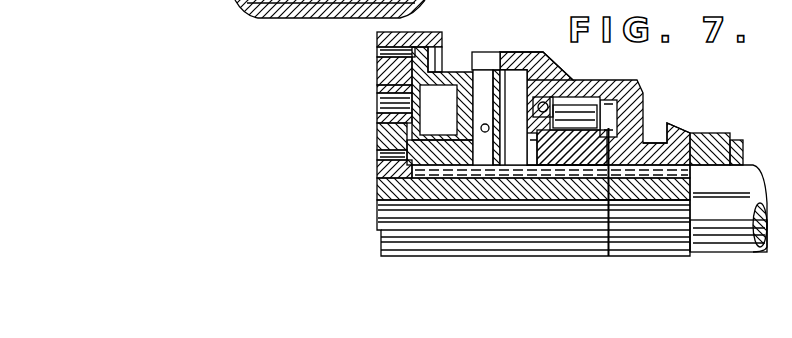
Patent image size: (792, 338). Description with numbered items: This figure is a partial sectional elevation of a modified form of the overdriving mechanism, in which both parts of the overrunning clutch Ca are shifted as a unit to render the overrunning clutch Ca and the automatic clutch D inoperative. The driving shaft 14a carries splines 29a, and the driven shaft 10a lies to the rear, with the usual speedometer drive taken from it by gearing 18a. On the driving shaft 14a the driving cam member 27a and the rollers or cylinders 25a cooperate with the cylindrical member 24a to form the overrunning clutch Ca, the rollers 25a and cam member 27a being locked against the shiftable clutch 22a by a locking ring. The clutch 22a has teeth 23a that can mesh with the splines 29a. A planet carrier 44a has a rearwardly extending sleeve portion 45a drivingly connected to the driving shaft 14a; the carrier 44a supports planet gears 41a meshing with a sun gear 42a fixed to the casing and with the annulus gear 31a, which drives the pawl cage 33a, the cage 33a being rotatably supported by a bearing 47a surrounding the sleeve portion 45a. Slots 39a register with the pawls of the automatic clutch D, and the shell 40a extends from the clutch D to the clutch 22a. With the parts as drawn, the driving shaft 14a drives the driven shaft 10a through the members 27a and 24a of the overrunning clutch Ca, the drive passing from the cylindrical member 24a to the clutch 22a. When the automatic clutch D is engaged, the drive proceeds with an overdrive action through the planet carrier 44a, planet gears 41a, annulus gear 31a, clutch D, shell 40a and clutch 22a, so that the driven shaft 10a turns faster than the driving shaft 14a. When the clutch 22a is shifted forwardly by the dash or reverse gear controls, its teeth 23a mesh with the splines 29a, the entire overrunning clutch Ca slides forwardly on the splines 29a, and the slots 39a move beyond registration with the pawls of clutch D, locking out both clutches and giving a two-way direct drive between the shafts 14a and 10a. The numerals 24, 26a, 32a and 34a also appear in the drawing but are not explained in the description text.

The driven shaft 10a is at (721, 252).
The driving shaft 14a is at (512, 245).
The speedometer drive gearing 18a is at (729, 136).
The shiftable clutch 22a is at (669, 136).
The teeth 23a is at (680, 170).
The plunger 24 is at (513, 117).
The cylindrical member 24a is at (580, 90).
The rollers or cylinders 25a is at (643, 92).
The block 26a is at (643, 108).
The driving cam member 27a is at (590, 203).
The splines 29a is at (546, 166).
The annulus gear 31a is at (377, 42).
The casing wall 32a is at (428, 43).
The pawl cage 33a is at (438, 110).
The pin 34a is at (525, 188).
The slots 39a is at (487, 53).
The shell 40a is at (502, 56).
The planet gears 41a is at (388, 68).
The sun gear 42a is at (400, 180).
The planet carrier 44a is at (380, 133).
The sleeve portion 45a is at (412, 172).
The bearing 47a is at (420, 152).
The overrunning clutch Ca is at (562, 110).
The automatic clutch D is at (493, 19).